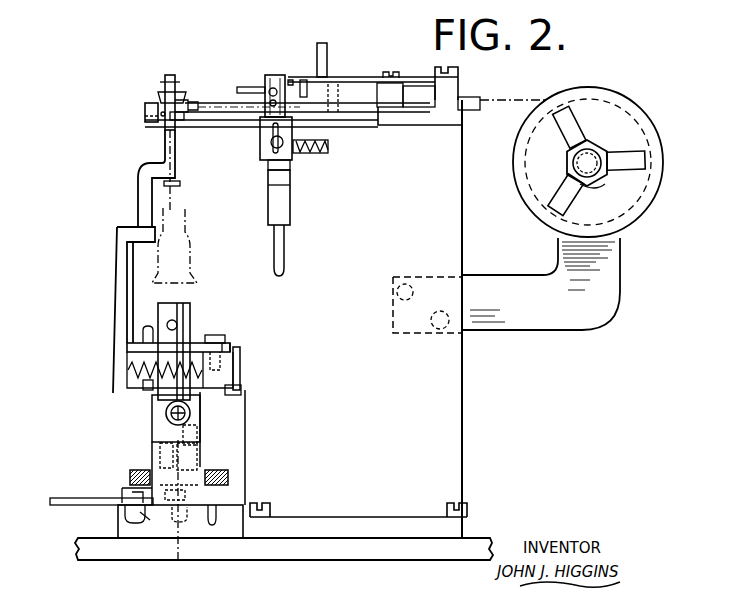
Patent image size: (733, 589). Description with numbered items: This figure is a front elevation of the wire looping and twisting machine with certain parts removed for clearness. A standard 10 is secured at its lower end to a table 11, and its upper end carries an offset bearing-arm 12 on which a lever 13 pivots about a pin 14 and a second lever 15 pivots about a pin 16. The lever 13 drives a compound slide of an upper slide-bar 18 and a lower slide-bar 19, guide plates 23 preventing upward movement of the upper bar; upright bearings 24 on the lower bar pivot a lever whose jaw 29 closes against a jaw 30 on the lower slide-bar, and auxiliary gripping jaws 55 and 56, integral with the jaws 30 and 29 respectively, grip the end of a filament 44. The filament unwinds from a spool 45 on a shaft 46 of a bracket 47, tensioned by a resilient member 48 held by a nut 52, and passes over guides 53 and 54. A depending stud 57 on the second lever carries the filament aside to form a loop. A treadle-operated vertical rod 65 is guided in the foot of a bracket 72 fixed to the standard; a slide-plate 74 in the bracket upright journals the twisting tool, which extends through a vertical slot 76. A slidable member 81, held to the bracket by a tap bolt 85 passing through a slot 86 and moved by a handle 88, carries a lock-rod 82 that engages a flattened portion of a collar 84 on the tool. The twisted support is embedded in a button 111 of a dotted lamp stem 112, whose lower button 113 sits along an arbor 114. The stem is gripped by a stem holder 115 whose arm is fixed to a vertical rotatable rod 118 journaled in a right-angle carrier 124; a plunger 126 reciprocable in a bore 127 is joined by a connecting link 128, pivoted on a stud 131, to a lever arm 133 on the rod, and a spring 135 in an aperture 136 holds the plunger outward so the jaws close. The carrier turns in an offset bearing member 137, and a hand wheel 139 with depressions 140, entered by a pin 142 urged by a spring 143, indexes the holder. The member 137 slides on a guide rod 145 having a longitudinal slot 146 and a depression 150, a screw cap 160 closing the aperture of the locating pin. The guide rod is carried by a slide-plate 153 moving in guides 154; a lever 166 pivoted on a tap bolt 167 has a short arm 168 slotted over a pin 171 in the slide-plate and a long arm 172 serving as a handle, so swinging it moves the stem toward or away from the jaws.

The standard 10 is at (465, 430).
The table 11 is at (484, 520).
The offset bearing-arm 12 is at (443, 118).
The lever 13 is at (373, 98).
The pin 14 is at (416, 71).
The second lever 15 is at (356, 77).
The pin 16 is at (459, 76).
The upper slide-bar 18 is at (228, 106).
The lower slide-bar 19 is at (219, 128).
The guide plates 23 is at (145, 108).
The upright bearings 24 is at (176, 75).
The jaw 29 is at (160, 100).
The jaw 30 is at (163, 114).
The filament 44 is at (512, 89).
The spool 45 is at (617, 100).
The shaft 46 is at (592, 142).
The bracket 47 is at (622, 262).
The resilient member 48 is at (562, 148).
The nut 52 is at (598, 188).
The guide 53 is at (476, 99).
The guide 54 is at (335, 98).
The auxiliary gripping jaw 55 is at (180, 120).
The auxiliary gripping jaw 56 is at (192, 100).
The depending stud 57 is at (303, 80).
The vertical rod 65 is at (288, 234).
The bracket 72 is at (292, 178).
The slide-plate 74 is at (274, 74).
The vertical slot 76 is at (271, 126).
The slidable member 81 is at (293, 126).
The lock-rod 82 is at (319, 43).
The collar 84 is at (270, 89).
The tap bolt 85 is at (278, 163).
The slot 86 is at (272, 147).
The handle 88 is at (330, 153).
The button 111 is at (145, 117).
The lamp stem 112 is at (183, 211).
The lower button 113 is at (181, 183).
The arbor 114 is at (165, 155).
The stem holder 115 is at (172, 308).
The vertical rotatable rod 118 is at (140, 261).
The rotatable bracket 124 is at (149, 346).
The plunger 126 is at (242, 380).
The bore 127 is at (243, 392).
The connecting link 128 is at (229, 347).
The stud 131 is at (214, 336).
The lever arm 133 is at (143, 343).
The spring 135 is at (148, 392).
The aperture 136 is at (127, 388).
The offset bearing member 137 is at (185, 437).
The hand wheel 139 is at (130, 479).
The depressions 140 is at (198, 470).
The pin 142 is at (166, 455).
The spring 143 is at (198, 433).
The guide rod 145 is at (190, 310).
The longitudinal slot 146 is at (193, 276).
The depression 150 is at (169, 323).
The slide-plate 153 is at (172, 520).
The guides 154 is at (216, 514).
The screw cap 160 is at (166, 413).
The lever 166 is at (146, 515).
The tap bolt 167 is at (122, 492).
The short arm 168 is at (230, 485).
The pin 171 is at (194, 514).
The long arm 172 is at (53, 505).